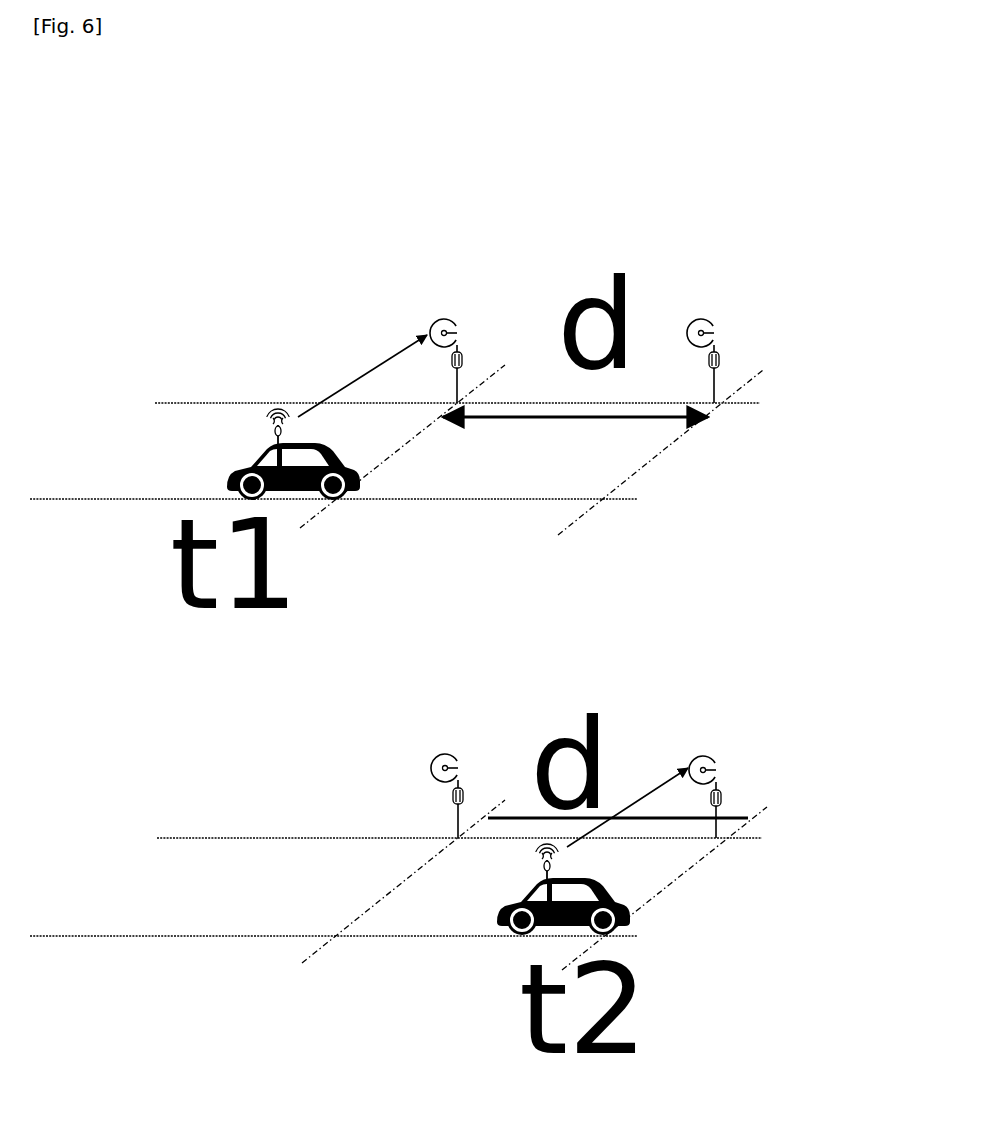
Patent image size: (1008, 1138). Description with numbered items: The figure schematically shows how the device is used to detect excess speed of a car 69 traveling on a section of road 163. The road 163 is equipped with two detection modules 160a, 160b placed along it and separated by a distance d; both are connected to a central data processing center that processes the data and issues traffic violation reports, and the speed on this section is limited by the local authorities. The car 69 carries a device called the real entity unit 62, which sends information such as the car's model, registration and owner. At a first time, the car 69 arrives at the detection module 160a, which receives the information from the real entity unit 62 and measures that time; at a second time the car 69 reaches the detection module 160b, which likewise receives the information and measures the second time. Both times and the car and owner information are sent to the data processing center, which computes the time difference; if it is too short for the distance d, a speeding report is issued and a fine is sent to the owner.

The detection module 160a is at (545, 380).
The detection module 160b is at (788, 387).
The real entity unit 62 is at (352, 437).
The car 69 is at (302, 462).
The road 163 is at (583, 447).